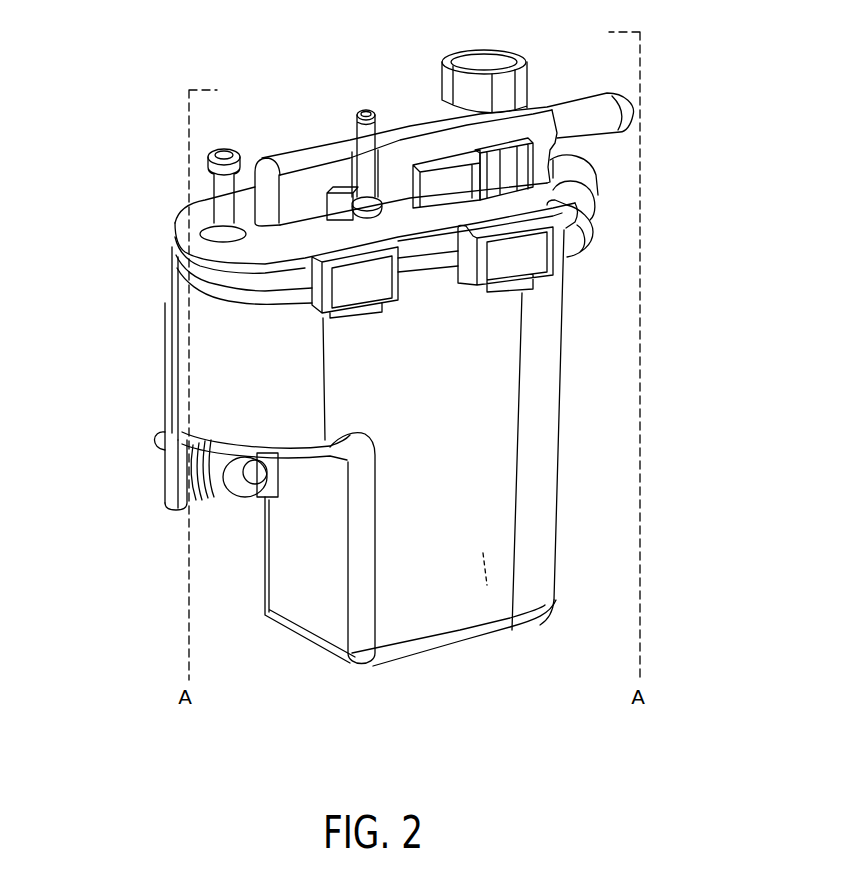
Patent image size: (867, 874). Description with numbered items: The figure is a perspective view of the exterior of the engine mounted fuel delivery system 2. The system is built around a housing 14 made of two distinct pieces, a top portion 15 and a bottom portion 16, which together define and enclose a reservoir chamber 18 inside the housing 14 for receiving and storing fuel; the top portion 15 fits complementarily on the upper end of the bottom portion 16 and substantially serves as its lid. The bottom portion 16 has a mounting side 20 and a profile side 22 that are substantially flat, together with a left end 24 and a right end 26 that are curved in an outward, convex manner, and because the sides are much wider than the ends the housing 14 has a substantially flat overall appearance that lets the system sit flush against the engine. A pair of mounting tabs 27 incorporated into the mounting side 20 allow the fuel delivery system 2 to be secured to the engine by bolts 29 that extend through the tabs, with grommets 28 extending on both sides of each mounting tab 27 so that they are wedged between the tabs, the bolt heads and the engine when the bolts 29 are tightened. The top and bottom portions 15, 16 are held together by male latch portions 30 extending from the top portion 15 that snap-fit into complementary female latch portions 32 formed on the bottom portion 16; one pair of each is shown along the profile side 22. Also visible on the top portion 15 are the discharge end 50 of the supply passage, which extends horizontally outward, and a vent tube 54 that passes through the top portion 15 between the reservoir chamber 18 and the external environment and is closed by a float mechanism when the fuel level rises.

The fuel delivery system 2 is at (145, 472).
The housing 14 is at (568, 353).
The top portion 15 is at (197, 220).
The bottom portion 16 is at (540, 423).
The reservoir chamber 18 is at (487, 585).
The mounting side 20 is at (168, 268).
The profile side 22 is at (420, 627).
The left end 24 is at (212, 350).
The right end 26 is at (557, 540).
The mounting tabs 27 is at (167, 497).
The grommets 28 is at (203, 497).
The bolts 29 is at (247, 497).
The male latch portions 30 is at (328, 260).
The female latch portions 32 is at (343, 305).
The discharge end 50 is at (608, 93).
The vent tube 54 is at (357, 128).